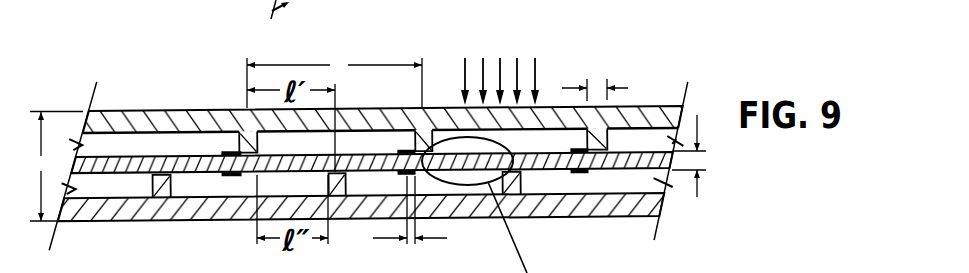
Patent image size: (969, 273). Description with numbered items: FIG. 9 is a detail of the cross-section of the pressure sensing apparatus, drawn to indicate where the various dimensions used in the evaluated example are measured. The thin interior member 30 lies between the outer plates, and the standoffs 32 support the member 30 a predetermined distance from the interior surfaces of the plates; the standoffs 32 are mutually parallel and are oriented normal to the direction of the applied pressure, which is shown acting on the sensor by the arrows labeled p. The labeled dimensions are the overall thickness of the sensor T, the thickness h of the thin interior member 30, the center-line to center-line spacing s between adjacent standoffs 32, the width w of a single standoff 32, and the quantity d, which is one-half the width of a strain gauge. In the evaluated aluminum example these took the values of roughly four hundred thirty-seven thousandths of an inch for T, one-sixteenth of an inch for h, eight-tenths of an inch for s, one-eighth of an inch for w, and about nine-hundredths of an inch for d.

The member 30 is at (628, 163).
The standoffs 32 is at (521, 184).
The thickness of the sensor T is at (56, 167).
The thickness of the thin, interior member h is at (690, 175).
The center-line to center-line spacing between standoffs s is at (334, 78).
The one-half the width of a strain gauge d is at (422, 216).
The width of a standoff w is at (611, 85).
The applied pressure p is at (500, 64).